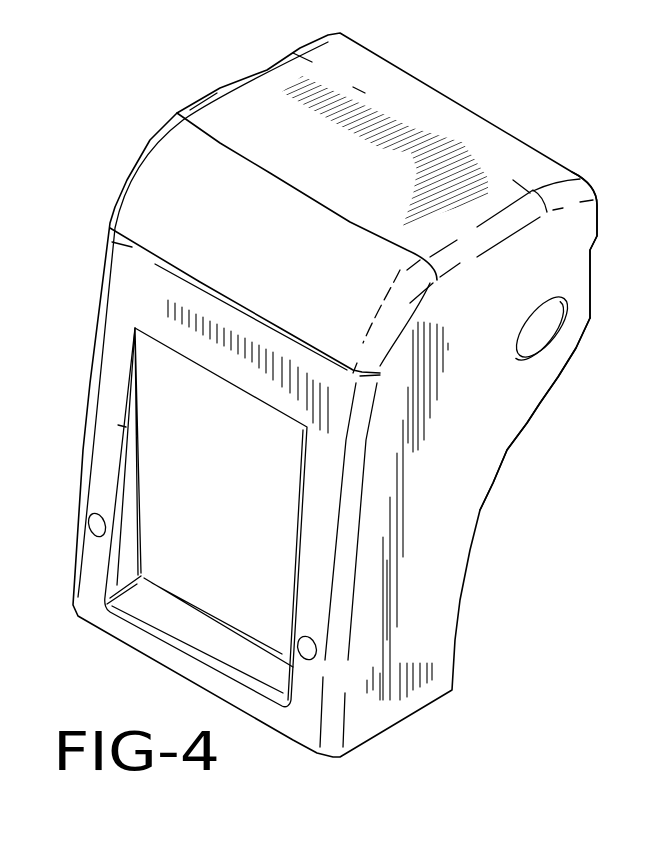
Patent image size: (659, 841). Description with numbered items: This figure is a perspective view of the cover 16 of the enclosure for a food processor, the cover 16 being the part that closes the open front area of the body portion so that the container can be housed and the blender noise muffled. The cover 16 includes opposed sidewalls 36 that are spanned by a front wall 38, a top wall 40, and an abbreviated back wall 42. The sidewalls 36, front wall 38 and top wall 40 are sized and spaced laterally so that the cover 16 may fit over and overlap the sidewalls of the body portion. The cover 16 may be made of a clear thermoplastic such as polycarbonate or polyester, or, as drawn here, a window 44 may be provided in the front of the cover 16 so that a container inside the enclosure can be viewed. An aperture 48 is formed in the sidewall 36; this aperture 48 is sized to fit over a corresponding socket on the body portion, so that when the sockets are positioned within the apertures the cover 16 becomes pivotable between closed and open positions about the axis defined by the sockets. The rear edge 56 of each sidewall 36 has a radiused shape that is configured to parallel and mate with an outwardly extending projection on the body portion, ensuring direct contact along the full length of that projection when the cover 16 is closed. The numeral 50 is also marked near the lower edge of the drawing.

The housing 16 is at (56, 152).
The side wall 36 is at (457, 527).
The front wall 38 is at (100, 410).
The top wall 40 is at (253, 90).
The rear corner wall 42 is at (598, 217).
The recess 44 is at (233, 499).
The aperture 48 is at (558, 333).
The base 50 is at (658, 712).
The side contour 56 is at (513, 442).